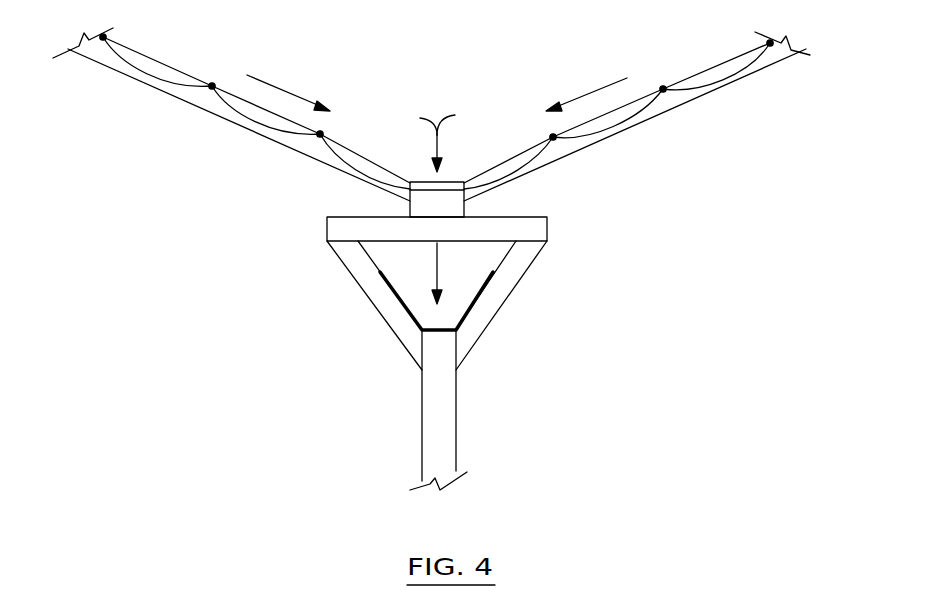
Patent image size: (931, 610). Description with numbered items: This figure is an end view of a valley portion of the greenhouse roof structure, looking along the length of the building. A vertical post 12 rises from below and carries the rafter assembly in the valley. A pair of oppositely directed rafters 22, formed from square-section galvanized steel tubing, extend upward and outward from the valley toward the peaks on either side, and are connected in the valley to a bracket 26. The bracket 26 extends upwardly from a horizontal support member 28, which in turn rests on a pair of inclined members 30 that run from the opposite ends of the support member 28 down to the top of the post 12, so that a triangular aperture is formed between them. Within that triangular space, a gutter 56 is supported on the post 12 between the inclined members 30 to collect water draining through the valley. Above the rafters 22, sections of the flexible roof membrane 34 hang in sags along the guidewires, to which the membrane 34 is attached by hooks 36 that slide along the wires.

The vertical post 12 is at (428, 415).
The rafter 22 is at (173, 68).
The bracket 26 is at (452, 207).
The horizontal support member 28 is at (337, 232).
The inclined member 30 is at (382, 293).
The flexible roof membrane 34 is at (233, 112).
The hook 36 is at (665, 88).
The gutter 56 is at (465, 309).